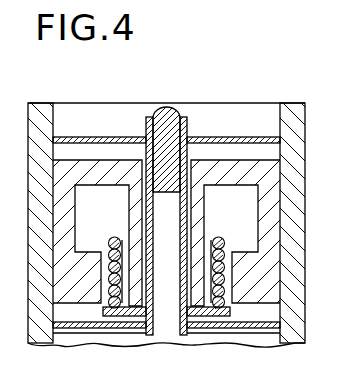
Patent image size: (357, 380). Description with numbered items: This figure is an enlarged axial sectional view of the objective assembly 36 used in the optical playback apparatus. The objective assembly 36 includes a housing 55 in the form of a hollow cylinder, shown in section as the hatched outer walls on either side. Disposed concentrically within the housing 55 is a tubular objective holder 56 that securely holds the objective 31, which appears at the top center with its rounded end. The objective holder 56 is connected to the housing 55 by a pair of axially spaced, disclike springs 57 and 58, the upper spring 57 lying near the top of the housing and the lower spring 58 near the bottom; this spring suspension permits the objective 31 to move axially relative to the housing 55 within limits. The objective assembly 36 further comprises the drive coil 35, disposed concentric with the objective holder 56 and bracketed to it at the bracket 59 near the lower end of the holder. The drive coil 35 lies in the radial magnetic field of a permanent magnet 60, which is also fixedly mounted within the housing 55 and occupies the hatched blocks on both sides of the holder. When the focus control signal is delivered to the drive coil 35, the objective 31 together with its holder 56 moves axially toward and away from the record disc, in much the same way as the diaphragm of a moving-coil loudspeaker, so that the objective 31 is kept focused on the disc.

The objective assembly 36 is at (281, 99).
The housing 55 is at (303, 206).
The disclike spring 57 is at (235, 137).
The permanent magnet 60 is at (272, 298).
The objective 31 is at (168, 102).
The objective holder 56 is at (148, 117).
The drive coil 35 is at (102, 312).
The bracket 59 is at (132, 315).
The disclike spring 58 is at (247, 329).